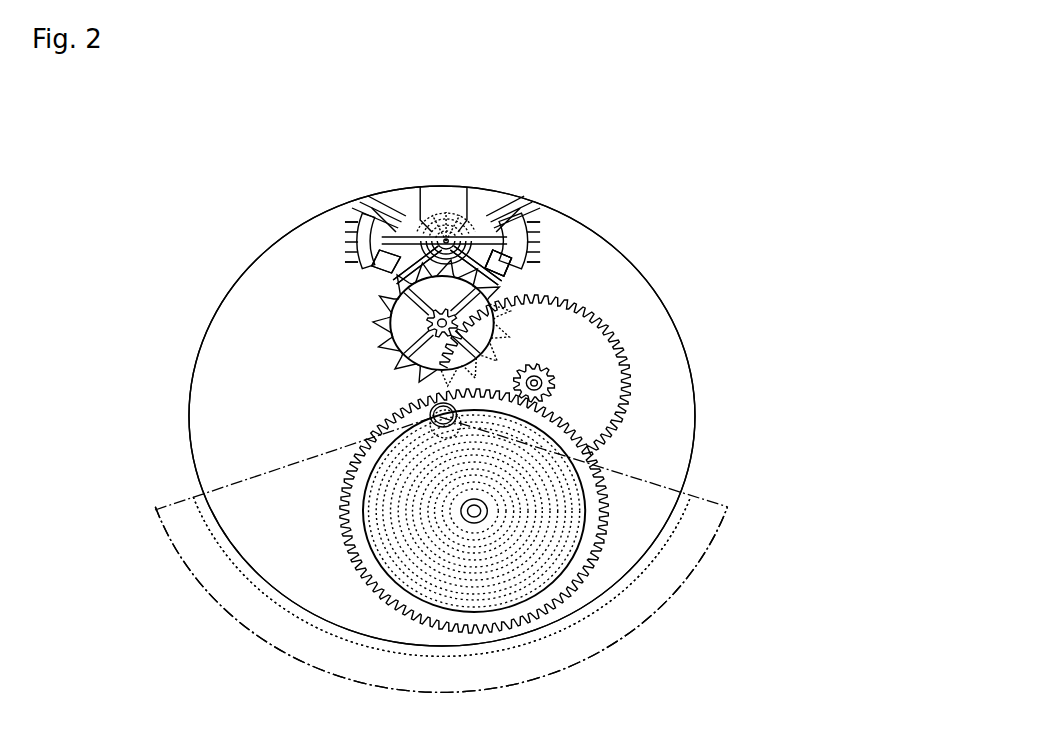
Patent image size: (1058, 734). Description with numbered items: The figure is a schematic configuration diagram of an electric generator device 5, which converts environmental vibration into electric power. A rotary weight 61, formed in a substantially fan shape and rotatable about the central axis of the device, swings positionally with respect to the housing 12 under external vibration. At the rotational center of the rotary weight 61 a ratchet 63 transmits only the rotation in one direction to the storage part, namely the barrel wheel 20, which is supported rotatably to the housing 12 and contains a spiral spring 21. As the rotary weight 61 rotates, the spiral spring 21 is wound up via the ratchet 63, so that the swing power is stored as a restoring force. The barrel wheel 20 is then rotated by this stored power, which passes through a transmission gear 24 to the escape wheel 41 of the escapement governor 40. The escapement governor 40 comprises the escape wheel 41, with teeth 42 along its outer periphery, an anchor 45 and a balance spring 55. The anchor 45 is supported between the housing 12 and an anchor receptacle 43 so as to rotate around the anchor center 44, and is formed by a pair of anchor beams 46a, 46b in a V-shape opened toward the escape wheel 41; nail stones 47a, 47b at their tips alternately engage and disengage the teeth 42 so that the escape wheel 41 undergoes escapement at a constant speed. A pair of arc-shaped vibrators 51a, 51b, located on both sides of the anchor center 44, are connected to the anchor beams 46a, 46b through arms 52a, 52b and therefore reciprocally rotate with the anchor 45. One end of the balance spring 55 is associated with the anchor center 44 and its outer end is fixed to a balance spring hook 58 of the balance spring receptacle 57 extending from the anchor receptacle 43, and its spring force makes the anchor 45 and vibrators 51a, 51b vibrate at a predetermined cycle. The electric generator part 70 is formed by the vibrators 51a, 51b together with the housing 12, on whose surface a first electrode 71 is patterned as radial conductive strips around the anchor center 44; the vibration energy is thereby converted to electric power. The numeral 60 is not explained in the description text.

The electric generator device 5 is at (291, 242).
The housing 12 is at (672, 343).
The barrel wheel 20 is at (618, 491).
The spiral spring 21 is at (535, 590).
The transmission gear 24 is at (608, 312).
The escapement governor 40 is at (376, 197).
The escape wheel 41 is at (370, 355).
The teeth 42 is at (505, 243).
The anchor receptacle 43 is at (464, 208).
The anchor center 44 is at (452, 238).
The anchor 45 is at (500, 222).
The anchor beam 46a is at (346, 256).
The anchor beam 46b is at (542, 258).
The nail stone 47a is at (392, 283).
The nail stone 47b is at (512, 276).
The vibrator 51a is at (356, 262).
The vibrator 51b is at (540, 233).
The arm 52a is at (404, 236).
The arm 52b is at (487, 238).
The balance spring 55 is at (438, 226).
The balance spring receptacle 57 is at (376, 207).
The balance spring hook 58 is at (358, 260).
The indicator lever 60 is at (740, 527).
The rotary weight 61 is at (678, 565).
The ratchet 63 is at (432, 417).
The electric generator part 70 is at (336, 231).
The first electrode 71 is at (356, 232).